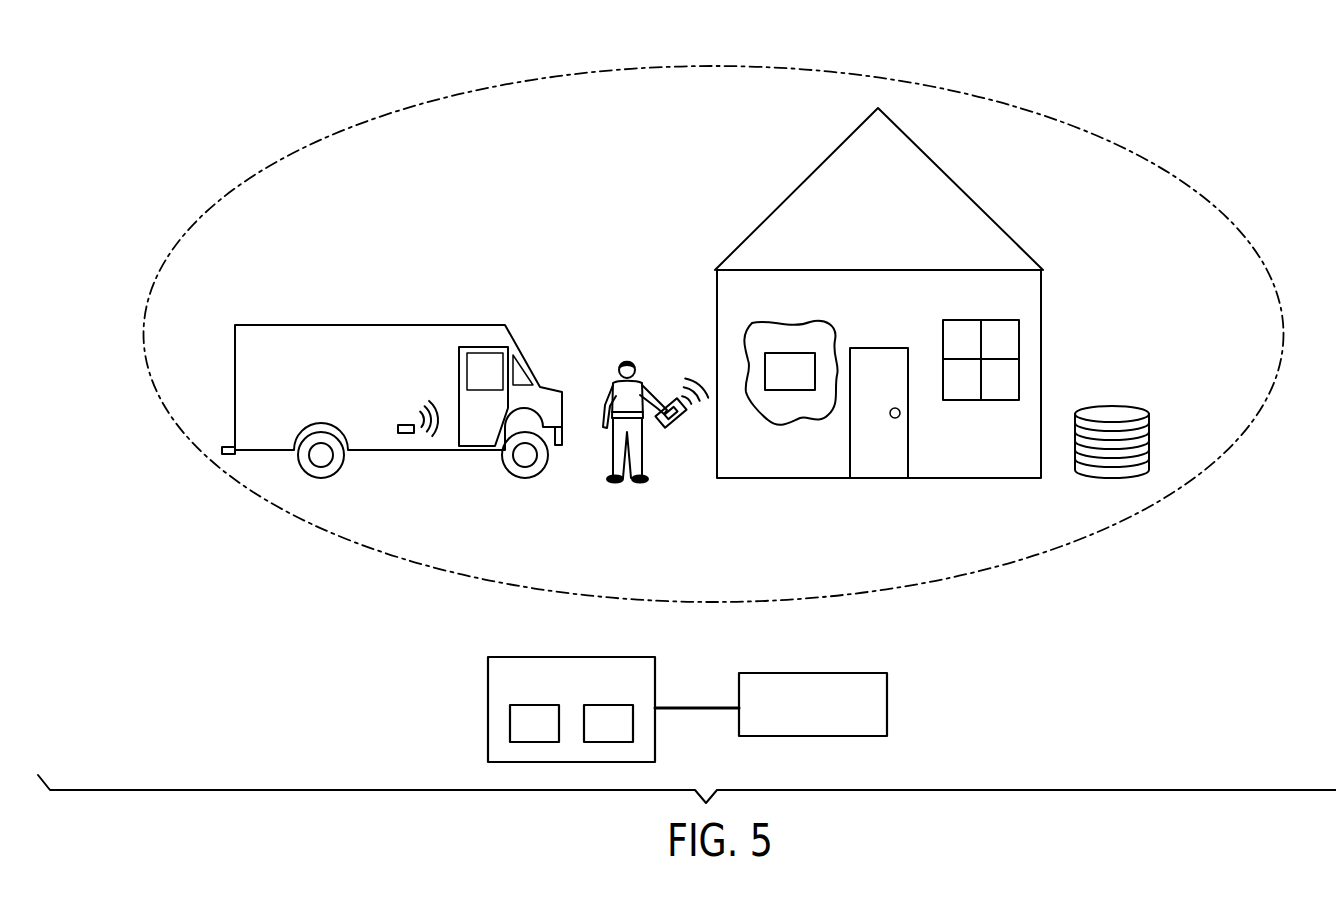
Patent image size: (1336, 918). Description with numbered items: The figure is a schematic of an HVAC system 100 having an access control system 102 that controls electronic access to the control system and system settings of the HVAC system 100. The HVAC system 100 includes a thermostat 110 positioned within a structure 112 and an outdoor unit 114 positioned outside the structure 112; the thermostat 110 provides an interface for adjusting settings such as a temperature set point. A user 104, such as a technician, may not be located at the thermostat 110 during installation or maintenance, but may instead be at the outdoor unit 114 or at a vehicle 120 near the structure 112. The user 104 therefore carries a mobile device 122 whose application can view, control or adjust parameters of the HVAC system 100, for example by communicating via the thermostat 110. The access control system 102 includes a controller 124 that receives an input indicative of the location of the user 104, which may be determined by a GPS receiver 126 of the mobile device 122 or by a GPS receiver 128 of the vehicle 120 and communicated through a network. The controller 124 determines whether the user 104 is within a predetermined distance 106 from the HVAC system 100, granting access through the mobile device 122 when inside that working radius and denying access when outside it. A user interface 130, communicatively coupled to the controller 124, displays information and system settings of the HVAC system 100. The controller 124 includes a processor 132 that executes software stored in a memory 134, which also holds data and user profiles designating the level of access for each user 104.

The HVAC system 100 is at (1037, 660).
The access control system 102 is at (378, 592).
The user 104 is at (608, 370).
The predetermined distance 106 is at (1043, 112).
The thermostat 110 is at (792, 352).
The structure 112 is at (994, 207).
The outdoor unit 114 is at (1120, 396).
The vehicle 120 is at (482, 318).
The mobile device 122 is at (682, 434).
The controller 124 is at (573, 657).
The GPS receiver 126 is at (667, 404).
The GPS receiver 128 is at (410, 433).
The user interface 130 is at (813, 673).
The processor 132 is at (510, 725).
The memory 134 is at (633, 722).